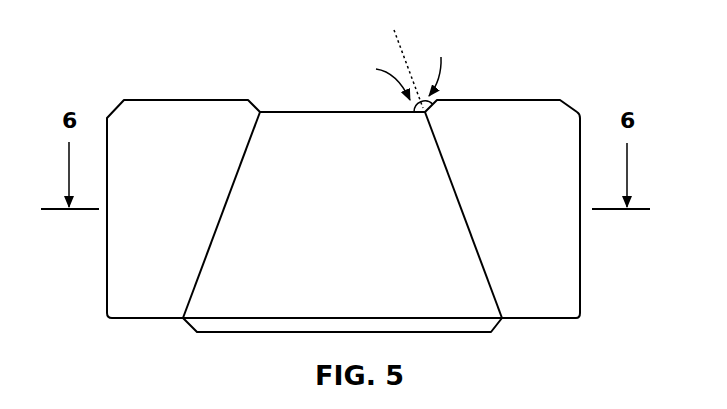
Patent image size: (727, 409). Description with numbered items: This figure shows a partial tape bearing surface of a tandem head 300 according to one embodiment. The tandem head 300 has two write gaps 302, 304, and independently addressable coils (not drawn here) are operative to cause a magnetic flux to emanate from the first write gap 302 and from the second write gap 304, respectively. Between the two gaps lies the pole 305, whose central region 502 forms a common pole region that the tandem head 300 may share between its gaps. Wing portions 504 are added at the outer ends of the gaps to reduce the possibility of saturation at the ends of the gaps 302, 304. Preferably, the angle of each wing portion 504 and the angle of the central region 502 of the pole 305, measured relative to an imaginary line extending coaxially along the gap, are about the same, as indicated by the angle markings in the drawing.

The tandem head 300 is at (324, 171).
The write gap 302 is at (247, 146).
The write gap 304 is at (439, 148).
The pole 305 is at (305, 142).
The central region 502 is at (345, 190).
The wing portion 504 is at (538, 99).